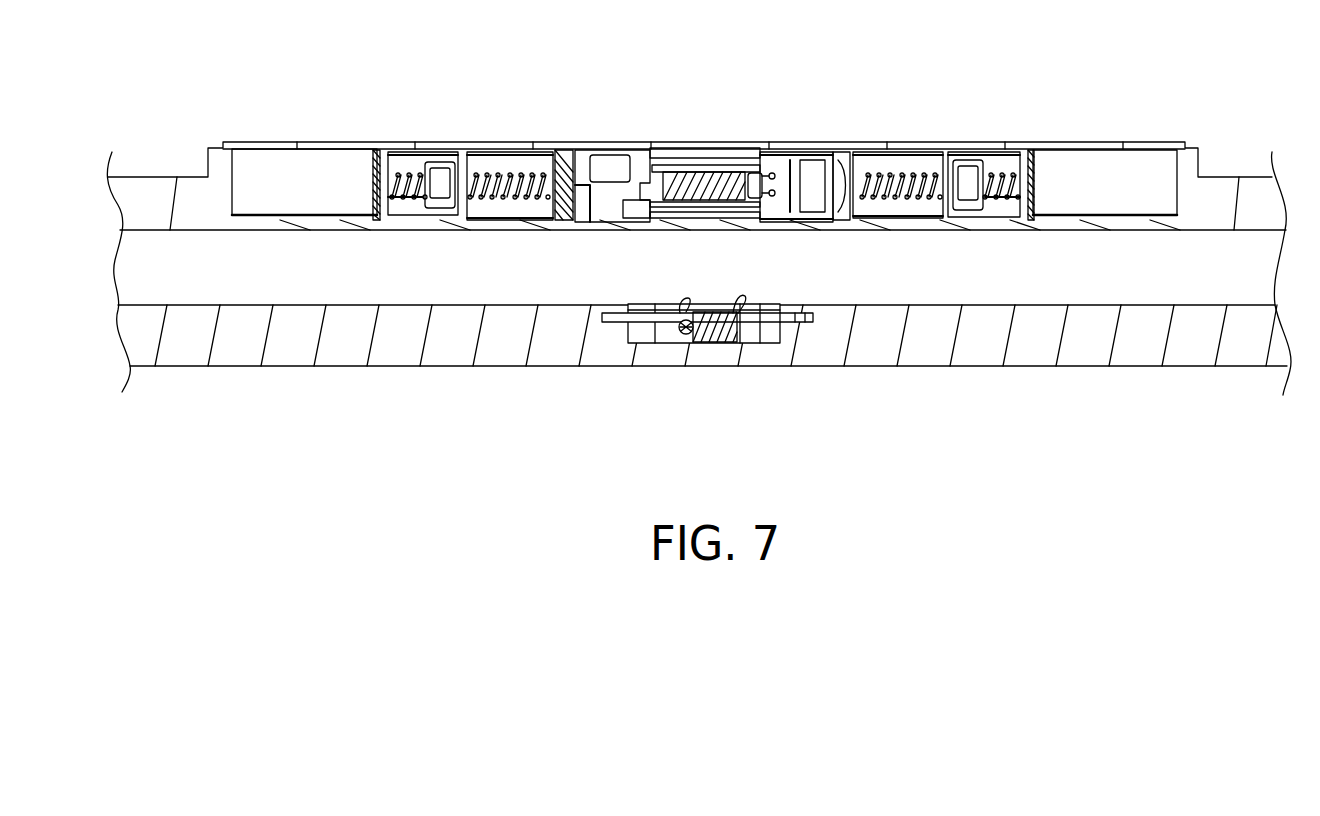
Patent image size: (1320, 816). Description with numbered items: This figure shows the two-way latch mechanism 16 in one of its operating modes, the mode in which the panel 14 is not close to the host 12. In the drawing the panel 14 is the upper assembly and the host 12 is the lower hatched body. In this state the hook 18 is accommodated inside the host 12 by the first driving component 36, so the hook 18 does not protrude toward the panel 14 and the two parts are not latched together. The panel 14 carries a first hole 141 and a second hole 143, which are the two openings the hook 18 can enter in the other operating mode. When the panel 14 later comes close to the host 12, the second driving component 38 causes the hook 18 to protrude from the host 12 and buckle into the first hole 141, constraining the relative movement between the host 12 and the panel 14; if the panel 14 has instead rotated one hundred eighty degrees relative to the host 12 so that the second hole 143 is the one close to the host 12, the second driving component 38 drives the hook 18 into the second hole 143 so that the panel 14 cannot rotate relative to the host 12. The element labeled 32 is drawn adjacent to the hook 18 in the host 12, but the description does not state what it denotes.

The host 12 is at (1238, 352).
The panel 14 is at (1228, 177).
The two-way latch mechanism 16 is at (704, 117).
The first hole 141 is at (673, 147).
The second hole 143 is at (703, 147).
The second driving component 38 is at (743, 150).
The hook 18 is at (707, 358).
The latch bar 32 is at (765, 335).
The first driving component 36 is at (677, 338).